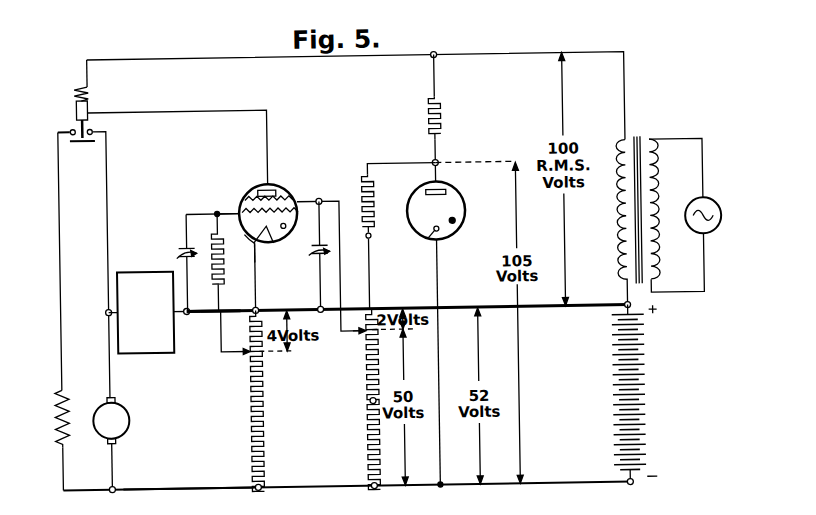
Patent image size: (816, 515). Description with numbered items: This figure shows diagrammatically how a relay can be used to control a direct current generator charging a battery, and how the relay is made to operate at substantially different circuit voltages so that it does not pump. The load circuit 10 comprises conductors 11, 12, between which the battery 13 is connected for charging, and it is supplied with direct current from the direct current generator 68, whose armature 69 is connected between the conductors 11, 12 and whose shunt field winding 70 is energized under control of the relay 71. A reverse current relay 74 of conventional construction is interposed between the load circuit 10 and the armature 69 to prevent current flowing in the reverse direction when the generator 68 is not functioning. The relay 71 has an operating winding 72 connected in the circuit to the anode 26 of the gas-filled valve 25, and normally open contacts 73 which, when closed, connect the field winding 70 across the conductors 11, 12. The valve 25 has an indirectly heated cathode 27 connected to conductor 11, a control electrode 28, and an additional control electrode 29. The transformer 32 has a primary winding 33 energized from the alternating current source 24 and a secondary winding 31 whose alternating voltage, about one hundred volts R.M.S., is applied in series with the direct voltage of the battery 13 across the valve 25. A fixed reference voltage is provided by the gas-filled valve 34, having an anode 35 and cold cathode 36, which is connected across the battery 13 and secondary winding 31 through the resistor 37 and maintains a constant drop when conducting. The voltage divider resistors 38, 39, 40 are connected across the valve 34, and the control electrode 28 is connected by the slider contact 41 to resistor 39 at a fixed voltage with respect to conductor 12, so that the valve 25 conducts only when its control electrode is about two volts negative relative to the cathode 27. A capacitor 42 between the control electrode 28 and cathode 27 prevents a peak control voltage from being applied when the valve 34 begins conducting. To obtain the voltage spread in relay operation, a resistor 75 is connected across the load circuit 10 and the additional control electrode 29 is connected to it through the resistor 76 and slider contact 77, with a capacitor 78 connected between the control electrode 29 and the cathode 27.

The load circuit 10 is at (224, 293).
The conductor 11 is at (203, 313).
The conductor 12 is at (181, 487).
The battery 13 is at (637, 390).
The alternating current source 24 is at (716, 208).
The gas-filled electric valve 25 is at (279, 190).
The anode 26 is at (258, 190).
The indirectly heated cathode 27 is at (240, 250).
The control electrode 28 is at (291, 205).
The additional control electrode 29 is at (241, 211).
The secondary winding 31 is at (620, 197).
The transformer 32 is at (636, 136).
The primary winding 33 is at (659, 202).
The gas-filled electric valve 34 is at (460, 186).
The anode 35 is at (428, 189).
The cold cathode 36 is at (432, 233).
The resistor 37 is at (442, 120).
The resistor 38 is at (375, 216).
The resistor 39 is at (358, 399).
The resistor 40 is at (365, 441).
The slider contact 41 is at (361, 331).
The capacitor 42 is at (314, 249).
The direct current generator 68 is at (28, 343).
The armature 69 is at (127, 412).
The shunt field winding 70 is at (57, 428).
The relay 71 is at (46, 87).
The operating winding 72 is at (88, 98).
The normally open contacts 73 is at (73, 125).
The reverse current relay 74 is at (143, 268).
The resistor 75 is at (263, 416).
The resistor 76 is at (212, 243).
The slider contact 77 is at (248, 353).
The capacitor 78 is at (180, 251).